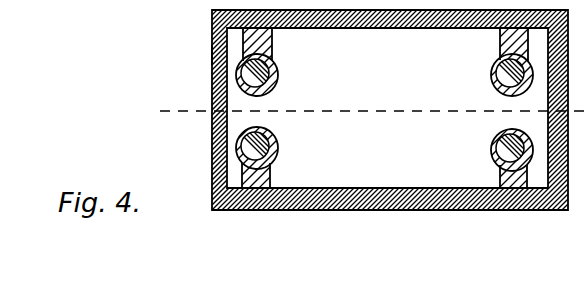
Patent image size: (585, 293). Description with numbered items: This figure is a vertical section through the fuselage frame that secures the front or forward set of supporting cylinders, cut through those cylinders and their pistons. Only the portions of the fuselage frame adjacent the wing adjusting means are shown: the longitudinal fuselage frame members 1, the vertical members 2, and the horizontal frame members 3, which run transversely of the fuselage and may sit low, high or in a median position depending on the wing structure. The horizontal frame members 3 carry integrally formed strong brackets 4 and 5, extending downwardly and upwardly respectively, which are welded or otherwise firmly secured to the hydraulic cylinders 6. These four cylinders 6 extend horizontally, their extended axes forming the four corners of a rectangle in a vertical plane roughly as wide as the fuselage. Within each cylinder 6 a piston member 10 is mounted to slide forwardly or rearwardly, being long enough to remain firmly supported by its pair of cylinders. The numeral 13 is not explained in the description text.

The longitudinal fuselage frame member 1 is at (184, 118).
The vertical frame member 2 is at (212, 56).
The horizontal frame member 3 is at (367, 28).
The bracket 4 is at (272, 43).
The bracket 5 is at (271, 178).
The hydraulic cylinder 6 is at (273, 90).
The piston member 10 is at (277, 72).
The member 13 is at (109, 6).